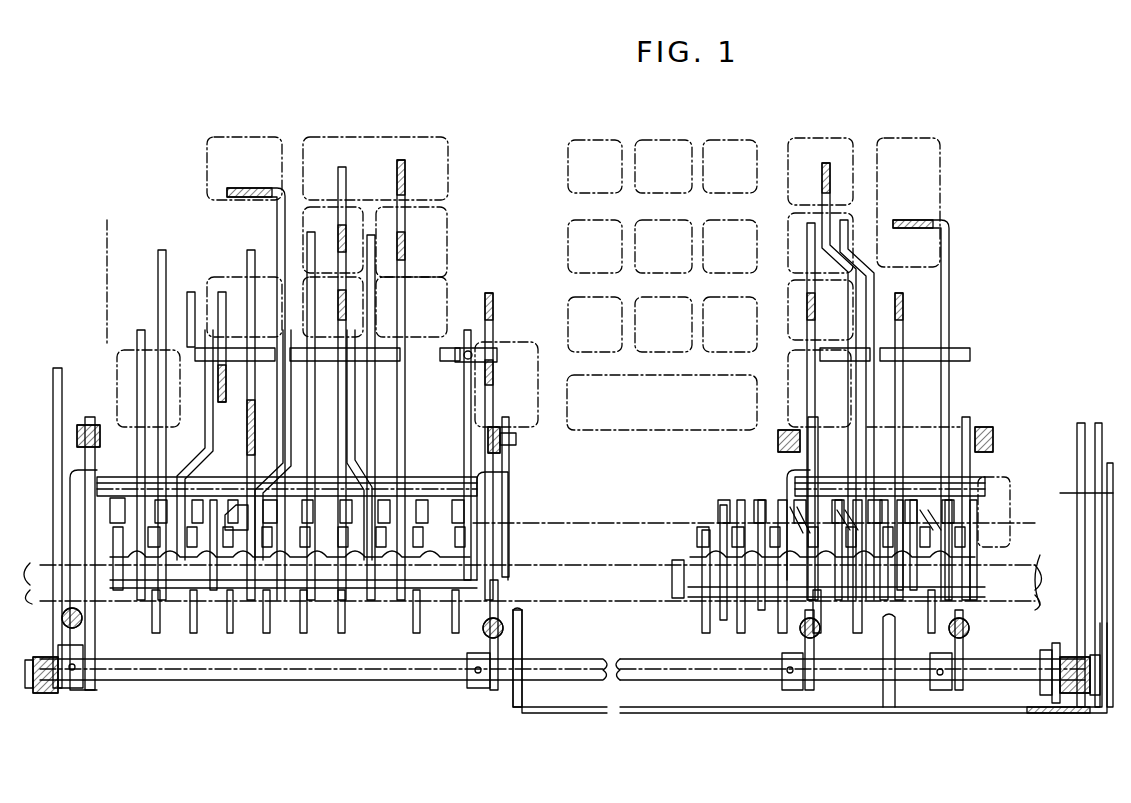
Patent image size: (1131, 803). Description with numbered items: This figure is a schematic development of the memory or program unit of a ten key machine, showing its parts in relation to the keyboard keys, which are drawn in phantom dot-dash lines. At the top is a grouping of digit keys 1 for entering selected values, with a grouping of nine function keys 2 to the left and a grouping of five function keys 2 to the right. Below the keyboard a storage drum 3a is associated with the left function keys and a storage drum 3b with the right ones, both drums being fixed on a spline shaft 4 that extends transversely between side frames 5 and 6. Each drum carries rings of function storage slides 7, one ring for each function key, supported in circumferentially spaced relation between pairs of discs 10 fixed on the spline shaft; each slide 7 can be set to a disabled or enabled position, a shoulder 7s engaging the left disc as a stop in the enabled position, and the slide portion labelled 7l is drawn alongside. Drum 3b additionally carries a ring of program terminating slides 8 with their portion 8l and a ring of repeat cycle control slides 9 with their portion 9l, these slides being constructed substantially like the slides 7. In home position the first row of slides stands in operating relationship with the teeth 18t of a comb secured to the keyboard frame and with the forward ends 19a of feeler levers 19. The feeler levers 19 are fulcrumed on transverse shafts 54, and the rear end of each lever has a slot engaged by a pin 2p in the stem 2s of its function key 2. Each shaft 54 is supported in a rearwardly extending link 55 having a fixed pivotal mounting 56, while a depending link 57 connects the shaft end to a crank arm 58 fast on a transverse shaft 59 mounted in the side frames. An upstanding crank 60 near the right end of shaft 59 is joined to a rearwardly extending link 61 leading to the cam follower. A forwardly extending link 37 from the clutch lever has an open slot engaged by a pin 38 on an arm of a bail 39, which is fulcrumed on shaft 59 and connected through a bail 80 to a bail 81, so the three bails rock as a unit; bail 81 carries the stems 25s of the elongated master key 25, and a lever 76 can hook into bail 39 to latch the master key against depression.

The digit keys 1 is at (674, 250).
The function keys 2 is at (318, 150).
The stem 2s is at (335, 305).
The pin 2p is at (470, 352).
The storage drum 3a is at (293, 634).
The storage drum 3b is at (860, 642).
The spline shaft 4 is at (1023, 567).
The side frame 5 is at (58, 375).
The side frame 6 is at (1097, 427).
The function storage slides 7 is at (128, 542).
The shoulder 7s is at (132, 525).
The lever arm 7l is at (152, 520).
The program terminating slides 8 is at (713, 540).
The lever arm 8l is at (733, 527).
The repeat cycle control slides 9 is at (773, 623).
The lever arm 9l is at (775, 515).
The discs 10 is at (190, 627).
The teeth 18t is at (235, 505).
The feeler levers 19 is at (137, 388).
The forward ends 19a is at (283, 600).
The master key 25 is at (577, 537).
The stems 25s is at (682, 582).
The link 37 is at (1073, 565).
The pin 38 is at (1095, 713).
The bail 39 is at (1035, 713).
The transverse shaft 54 is at (413, 483).
The link 55 is at (85, 453).
The pivotal mounting 56 is at (78, 432).
The depending link 57 is at (77, 510).
The crank arm 58 is at (110, 660).
The transverse shaft 59 is at (405, 673).
The upstanding crank 60 is at (1070, 663).
The link 61 is at (1080, 453).
The lever 76 is at (1053, 697).
The bail 80 is at (760, 713).
The bail 81 is at (630, 710).